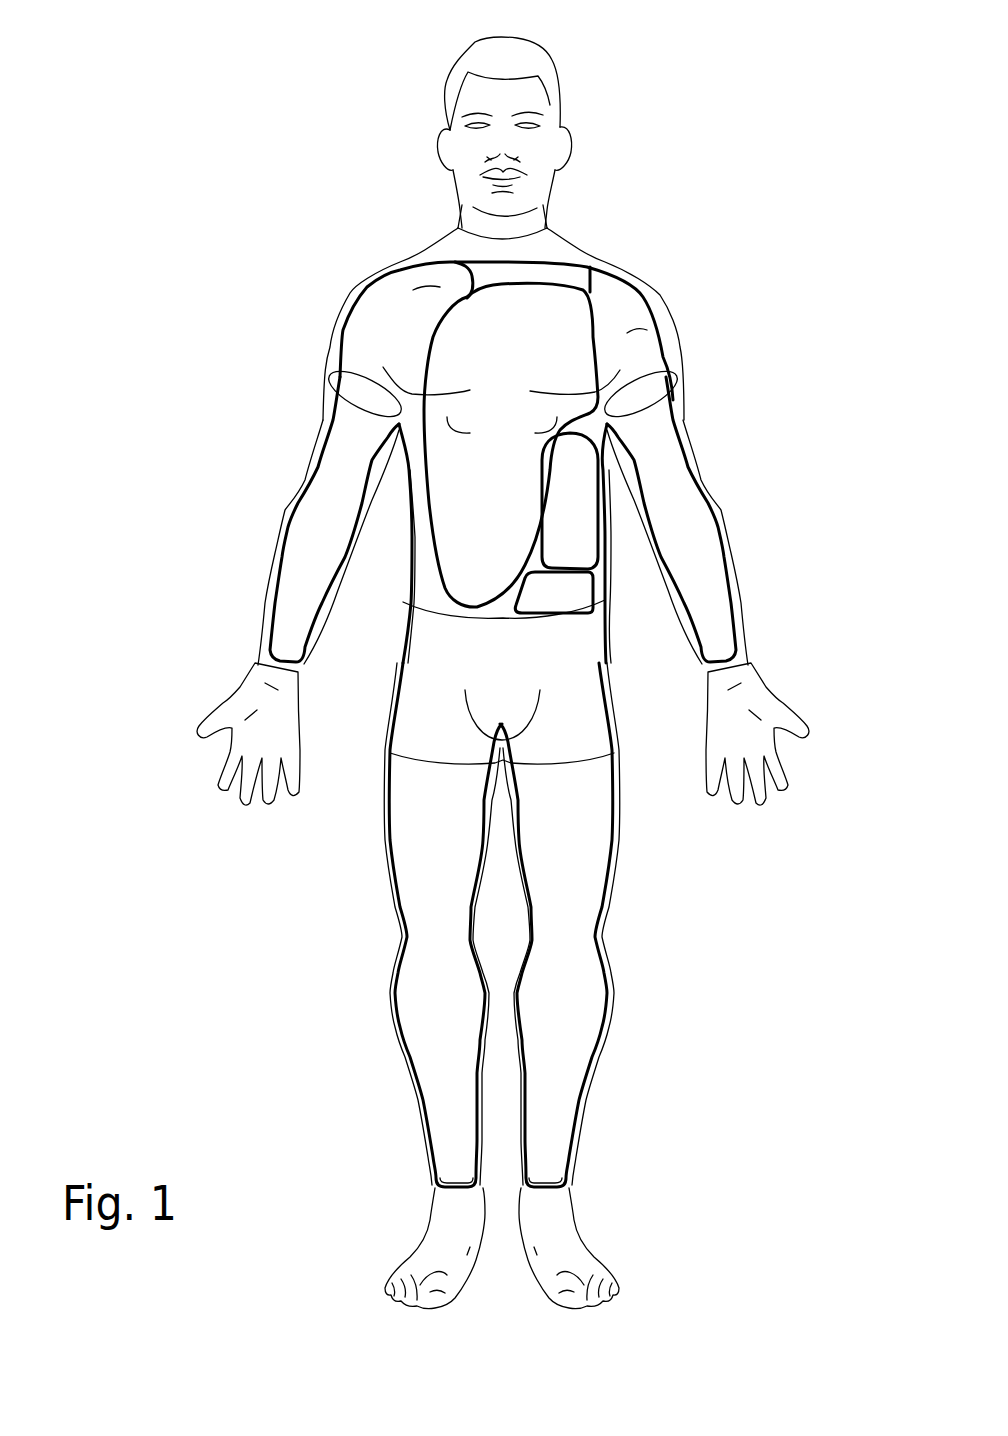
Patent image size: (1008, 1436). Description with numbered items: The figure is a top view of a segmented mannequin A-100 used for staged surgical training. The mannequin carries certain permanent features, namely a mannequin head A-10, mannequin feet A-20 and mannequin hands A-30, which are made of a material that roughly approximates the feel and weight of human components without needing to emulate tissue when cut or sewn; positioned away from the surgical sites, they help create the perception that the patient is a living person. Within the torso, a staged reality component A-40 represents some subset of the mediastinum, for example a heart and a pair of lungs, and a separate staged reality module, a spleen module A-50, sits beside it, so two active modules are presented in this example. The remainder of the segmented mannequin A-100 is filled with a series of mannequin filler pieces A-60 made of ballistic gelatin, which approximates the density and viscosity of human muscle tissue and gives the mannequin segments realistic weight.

The mannequin head A-10 is at (552, 80).
The mannequin feet A-20 is at (577, 1240).
The mannequin hands A-30 is at (760, 698).
The staged reality component A-40 is at (550, 310).
The spleen module A-50 is at (577, 487).
The mannequin filler pieces A-60 is at (380, 313).
The segmented mannequin A-100 is at (503, 776).